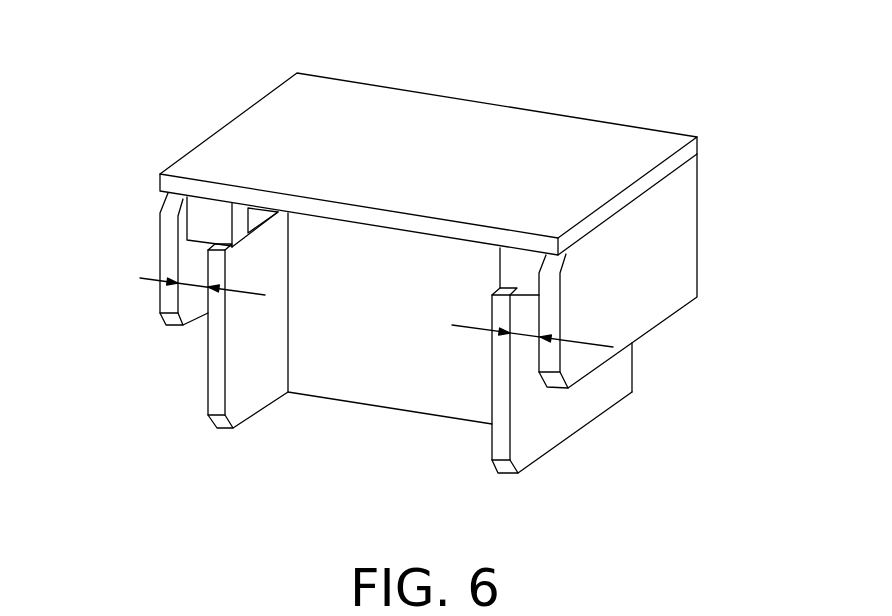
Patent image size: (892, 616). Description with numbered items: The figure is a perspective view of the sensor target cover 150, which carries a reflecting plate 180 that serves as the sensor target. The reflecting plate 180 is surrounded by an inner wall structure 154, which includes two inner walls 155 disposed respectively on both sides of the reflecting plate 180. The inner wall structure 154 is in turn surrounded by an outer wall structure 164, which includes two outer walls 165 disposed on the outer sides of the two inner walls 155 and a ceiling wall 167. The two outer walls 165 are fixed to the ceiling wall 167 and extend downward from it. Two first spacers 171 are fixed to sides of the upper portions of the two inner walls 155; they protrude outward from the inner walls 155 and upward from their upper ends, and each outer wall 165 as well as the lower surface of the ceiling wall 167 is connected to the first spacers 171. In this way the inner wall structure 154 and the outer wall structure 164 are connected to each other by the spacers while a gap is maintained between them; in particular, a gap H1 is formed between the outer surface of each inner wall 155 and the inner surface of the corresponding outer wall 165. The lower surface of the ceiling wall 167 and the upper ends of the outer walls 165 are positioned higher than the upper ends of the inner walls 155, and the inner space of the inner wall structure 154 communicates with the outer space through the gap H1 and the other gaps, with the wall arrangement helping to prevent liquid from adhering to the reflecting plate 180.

The sensor target cover 150 is at (421, 255).
The inner wall structure 154 is at (454, 332).
The inner wall 155 is at (208, 372).
The outer wall structure 164 is at (428, 127).
The outer wall 165 is at (158, 238).
The ceiling wall 167 is at (285, 107).
The first spacer 171 is at (208, 213).
The reflecting plate 180 is at (375, 370).
The gap H1 is at (362, 299).